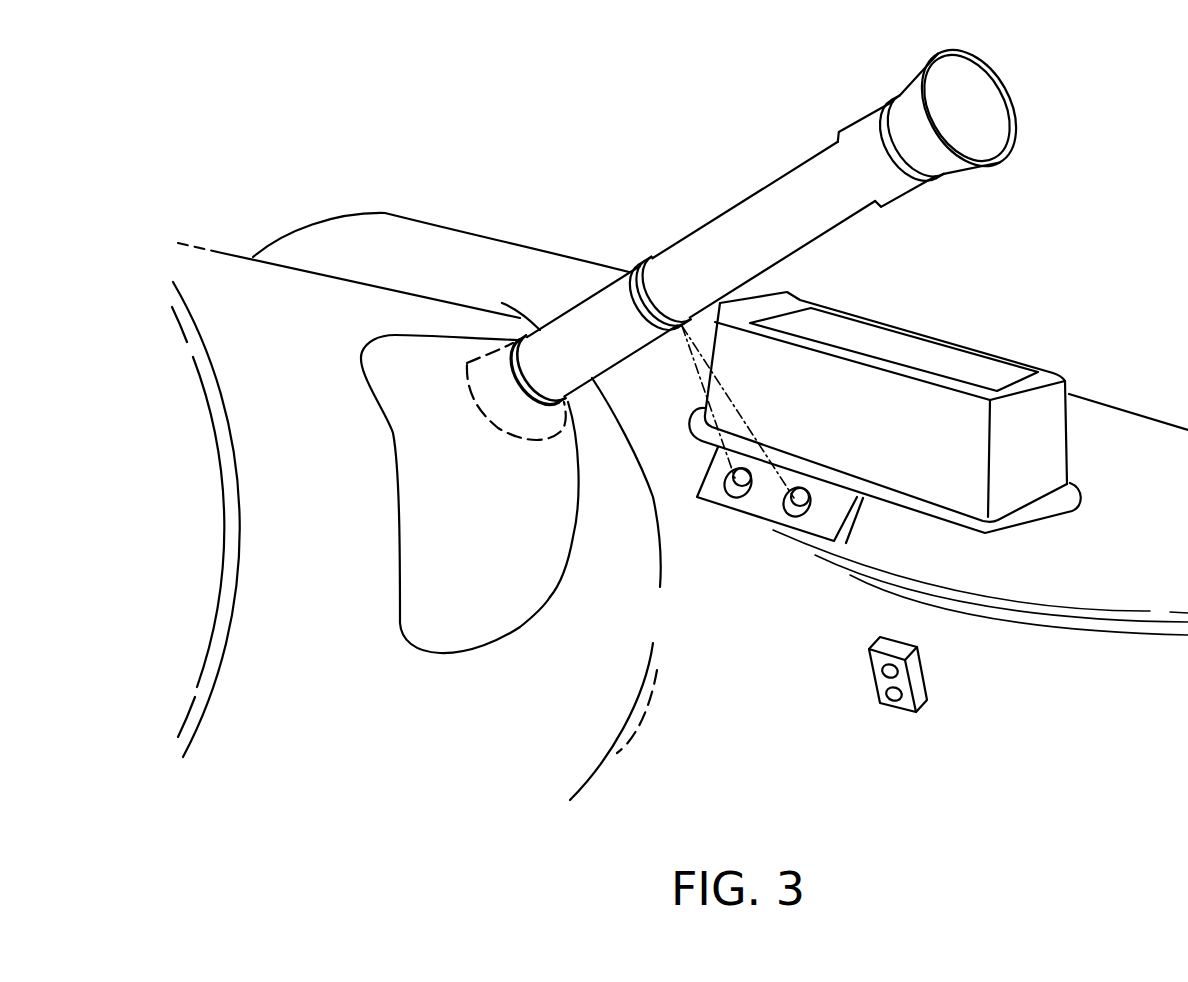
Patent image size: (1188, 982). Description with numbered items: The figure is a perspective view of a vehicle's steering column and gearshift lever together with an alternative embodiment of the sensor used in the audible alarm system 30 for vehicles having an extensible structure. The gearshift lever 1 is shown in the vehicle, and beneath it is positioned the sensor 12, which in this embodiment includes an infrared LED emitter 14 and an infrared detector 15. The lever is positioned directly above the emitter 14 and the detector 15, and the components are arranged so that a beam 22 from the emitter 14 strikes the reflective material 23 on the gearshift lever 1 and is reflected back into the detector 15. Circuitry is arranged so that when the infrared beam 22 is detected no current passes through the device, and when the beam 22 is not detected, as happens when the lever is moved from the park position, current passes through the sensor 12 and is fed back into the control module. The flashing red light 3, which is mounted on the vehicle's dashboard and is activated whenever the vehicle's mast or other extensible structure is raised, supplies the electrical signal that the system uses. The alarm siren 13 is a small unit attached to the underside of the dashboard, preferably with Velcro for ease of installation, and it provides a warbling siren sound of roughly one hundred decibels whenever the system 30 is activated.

The gearshift lever 1 is at (723, 238).
The flashing red light 3 is at (941, 356).
The sensor 12 is at (848, 524).
The alarm siren 13 is at (883, 712).
The infrared LED emitter 14 is at (733, 479).
The infrared detector 15 is at (796, 510).
The beam 22 is at (680, 332).
The reflective material 23 is at (652, 266).
The audible alarm system 30 is at (1090, 274).